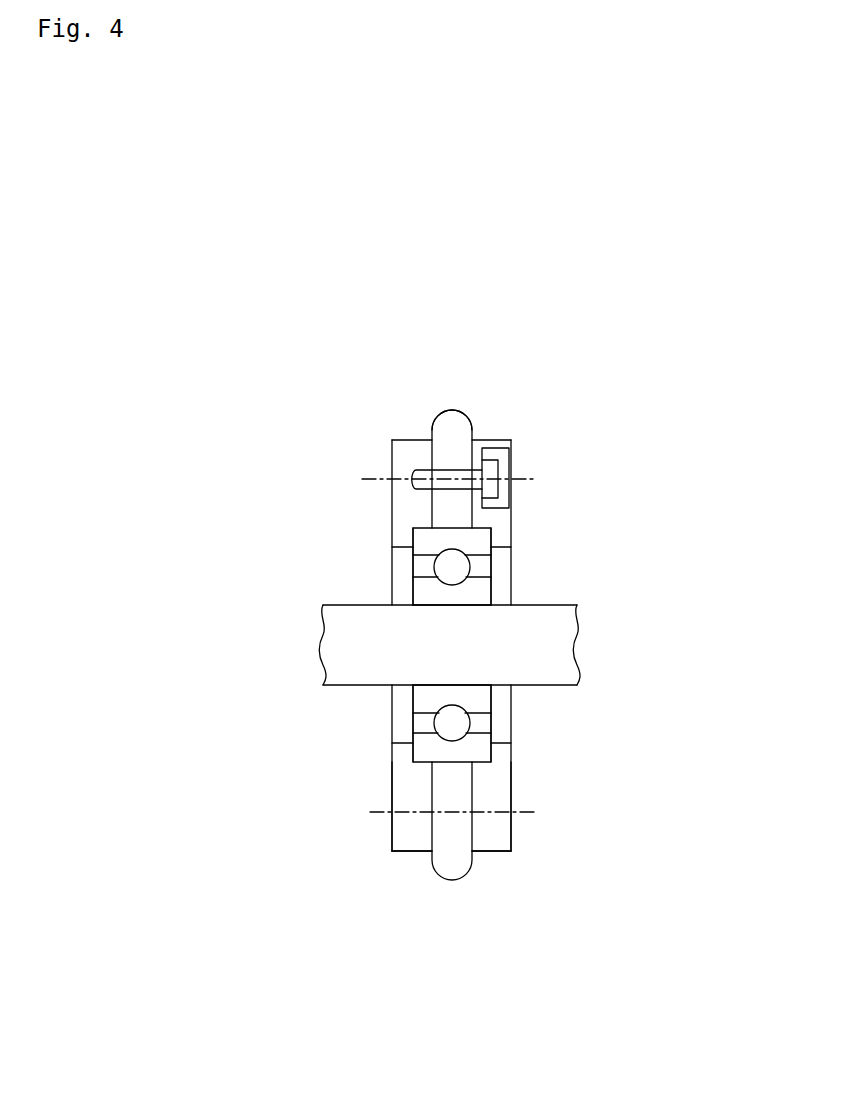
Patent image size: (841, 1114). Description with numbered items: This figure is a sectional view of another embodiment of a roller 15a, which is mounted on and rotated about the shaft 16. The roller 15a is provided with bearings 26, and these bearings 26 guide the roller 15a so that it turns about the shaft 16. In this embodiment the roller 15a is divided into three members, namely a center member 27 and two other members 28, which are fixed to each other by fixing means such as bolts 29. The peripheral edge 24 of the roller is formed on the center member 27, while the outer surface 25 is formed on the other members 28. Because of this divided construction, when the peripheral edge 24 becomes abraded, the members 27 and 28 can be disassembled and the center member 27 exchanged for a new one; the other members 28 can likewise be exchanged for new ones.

The shaft 16 is at (355, 622).
The peripheral edge 24 is at (460, 408).
The center member 27 is at (452, 430).
The outer surface 25 is at (408, 440).
The other members 28 is at (407, 513).
The bearings 26 is at (490, 592).
The bolts 29 is at (502, 468).
The roller 15a is at (510, 787).